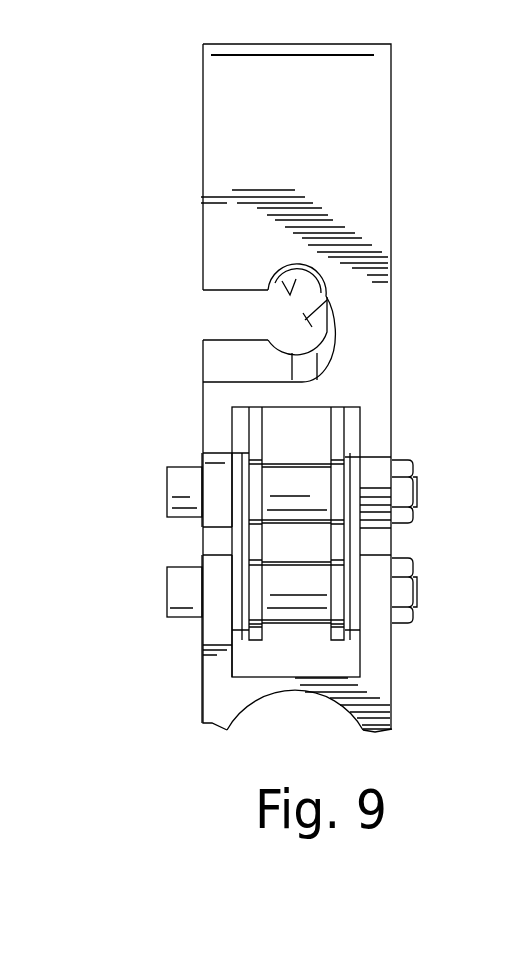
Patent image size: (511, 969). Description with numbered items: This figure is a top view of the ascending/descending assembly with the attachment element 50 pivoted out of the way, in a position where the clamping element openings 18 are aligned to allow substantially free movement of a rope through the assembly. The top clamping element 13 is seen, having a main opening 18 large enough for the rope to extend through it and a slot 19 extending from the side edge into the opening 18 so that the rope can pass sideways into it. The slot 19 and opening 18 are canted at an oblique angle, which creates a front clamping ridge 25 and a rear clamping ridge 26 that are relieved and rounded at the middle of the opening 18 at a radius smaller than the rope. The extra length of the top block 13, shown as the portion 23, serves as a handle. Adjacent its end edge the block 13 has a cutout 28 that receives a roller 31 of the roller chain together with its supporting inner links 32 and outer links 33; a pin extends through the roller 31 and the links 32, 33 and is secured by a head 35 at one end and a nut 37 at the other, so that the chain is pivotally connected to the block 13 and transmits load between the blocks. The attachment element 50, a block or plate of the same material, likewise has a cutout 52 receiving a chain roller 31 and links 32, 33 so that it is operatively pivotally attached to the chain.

The third clamping element 13 is at (362, 371).
The main opening 18 is at (327, 297).
The slot 19 is at (217, 298).
The extension portion 23 is at (401, 46).
The front clamping ridge 25 is at (277, 282).
The rear clamping ridge 26 is at (295, 338).
The cutout 28 is at (311, 405).
The roller 31 is at (308, 493).
The inner chain links 32 is at (262, 453).
The outer chain links 33 is at (242, 578).
The pin head 35 is at (178, 486).
The nut 37 is at (403, 488).
The attachment element 50 is at (377, 665).
The cutout 52 is at (258, 675).